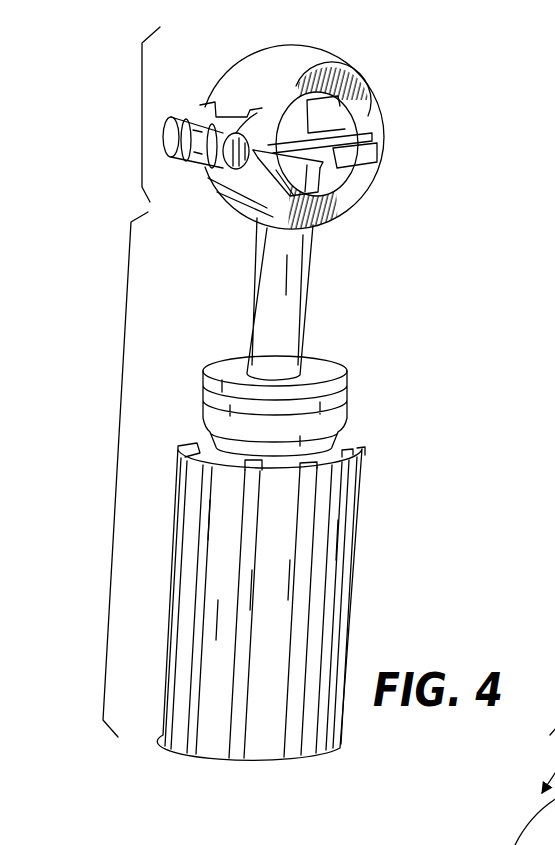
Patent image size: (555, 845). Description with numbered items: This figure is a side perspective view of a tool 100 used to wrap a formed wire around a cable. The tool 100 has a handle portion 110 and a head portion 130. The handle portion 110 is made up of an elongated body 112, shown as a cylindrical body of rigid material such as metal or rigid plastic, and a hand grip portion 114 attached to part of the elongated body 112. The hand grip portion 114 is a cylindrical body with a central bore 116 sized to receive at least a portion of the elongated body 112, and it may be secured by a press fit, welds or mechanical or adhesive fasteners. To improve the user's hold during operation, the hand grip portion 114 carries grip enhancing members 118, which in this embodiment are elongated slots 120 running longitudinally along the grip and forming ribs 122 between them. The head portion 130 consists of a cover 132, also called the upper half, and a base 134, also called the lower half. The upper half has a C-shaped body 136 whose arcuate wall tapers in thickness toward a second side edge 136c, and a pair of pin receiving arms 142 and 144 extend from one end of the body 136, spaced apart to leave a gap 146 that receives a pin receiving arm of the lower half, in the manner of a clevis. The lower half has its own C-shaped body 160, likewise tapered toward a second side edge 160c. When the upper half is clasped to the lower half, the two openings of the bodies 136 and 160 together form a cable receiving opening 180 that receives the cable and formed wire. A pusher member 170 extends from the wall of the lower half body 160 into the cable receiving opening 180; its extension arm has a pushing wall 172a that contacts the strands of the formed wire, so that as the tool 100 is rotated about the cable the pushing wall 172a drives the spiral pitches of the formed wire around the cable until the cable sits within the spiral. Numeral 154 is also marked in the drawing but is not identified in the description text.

The tool 100 is at (456, 348).
The handle portion 110 is at (118, 443).
The elongated body 112 is at (313, 290).
The hand grip portion 114 is at (173, 515).
The central bore 116 is at (317, 373).
The grip enhancing members 118 is at (165, 693).
The elongated slots 120 is at (240, 758).
The ribs 122 is at (163, 745).
The head portion 130 is at (140, 108).
The cover 132 is at (253, 43).
The base 134 is at (375, 189).
The C-shaped body 136 is at (293, 65).
The second side edge 136c is at (363, 102).
The first pin receiving arm 142 is at (230, 134).
The second pin receiving arm 144 is at (170, 117).
The gap 146 is at (207, 160).
The connector 154 is at (480, 786).
The C-shaped body 160 is at (382, 146).
The second side edge 160c is at (337, 207).
The pusher member 170 is at (292, 146).
The pushing wall 172a is at (290, 183).
The cable receiving opening 180 is at (347, 157).